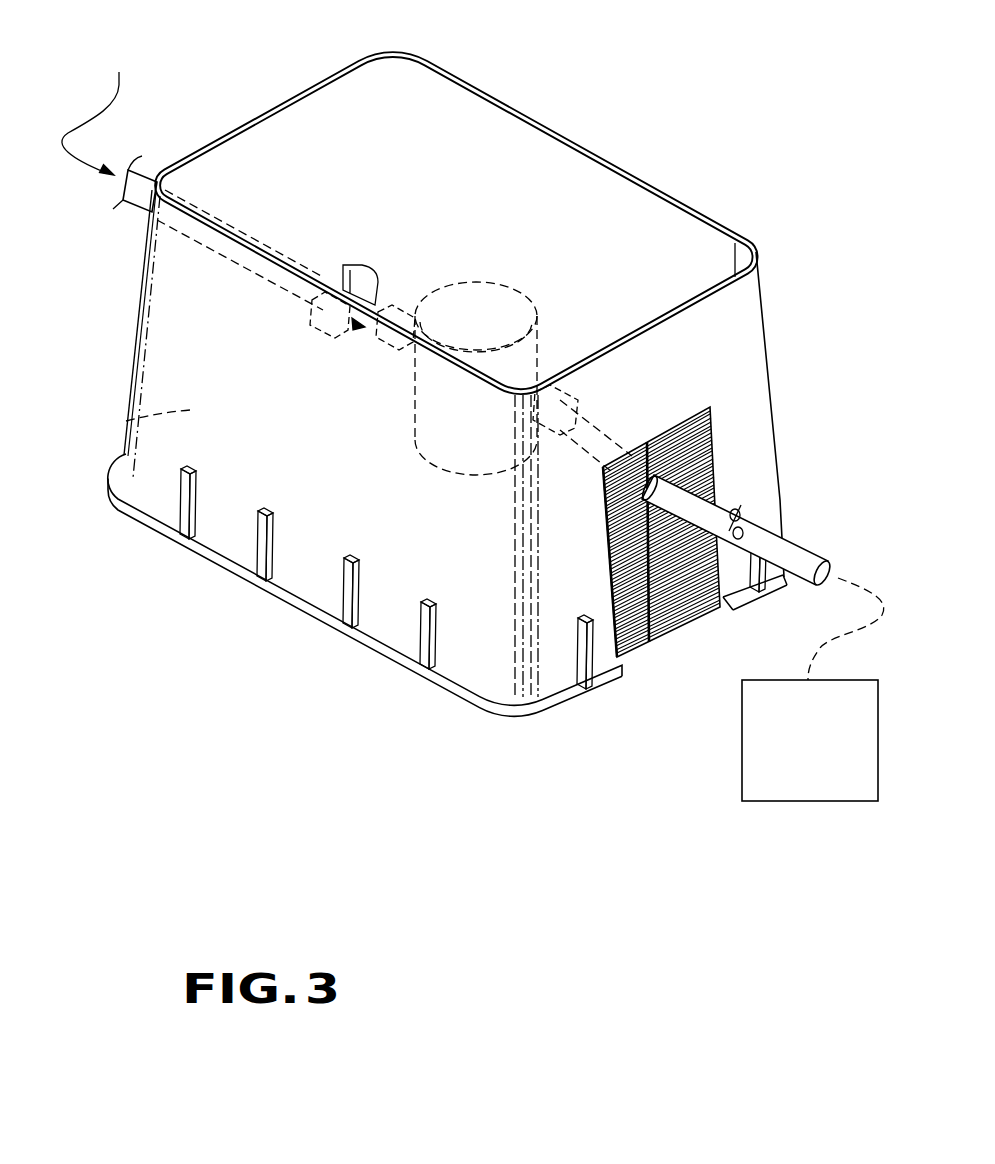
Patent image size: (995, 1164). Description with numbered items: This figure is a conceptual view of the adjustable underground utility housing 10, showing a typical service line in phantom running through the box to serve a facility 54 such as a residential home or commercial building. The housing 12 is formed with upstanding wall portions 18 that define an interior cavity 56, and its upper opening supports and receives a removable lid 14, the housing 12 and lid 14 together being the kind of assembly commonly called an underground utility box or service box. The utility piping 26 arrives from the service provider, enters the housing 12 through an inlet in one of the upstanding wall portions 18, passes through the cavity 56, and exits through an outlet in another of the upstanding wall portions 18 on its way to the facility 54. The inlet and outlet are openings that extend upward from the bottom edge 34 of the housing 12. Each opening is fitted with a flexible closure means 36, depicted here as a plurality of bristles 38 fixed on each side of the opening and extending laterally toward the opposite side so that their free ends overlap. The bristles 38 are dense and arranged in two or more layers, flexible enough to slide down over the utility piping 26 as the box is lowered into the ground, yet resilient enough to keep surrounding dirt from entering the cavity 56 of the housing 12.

The adjustable underground utility housing 10 is at (812, 292).
The housing 12 is at (462, 550).
The removable lid 14 is at (533, 183).
The upstanding wall portions 18 is at (320, 540).
The utility piping 26 is at (142, 198).
The bottom edge 34 is at (722, 610).
The flexible closure means 36 is at (654, 680).
The bristles 38 is at (672, 433).
The facility 54 is at (823, 781).
The cavity 56 is at (126, 421).